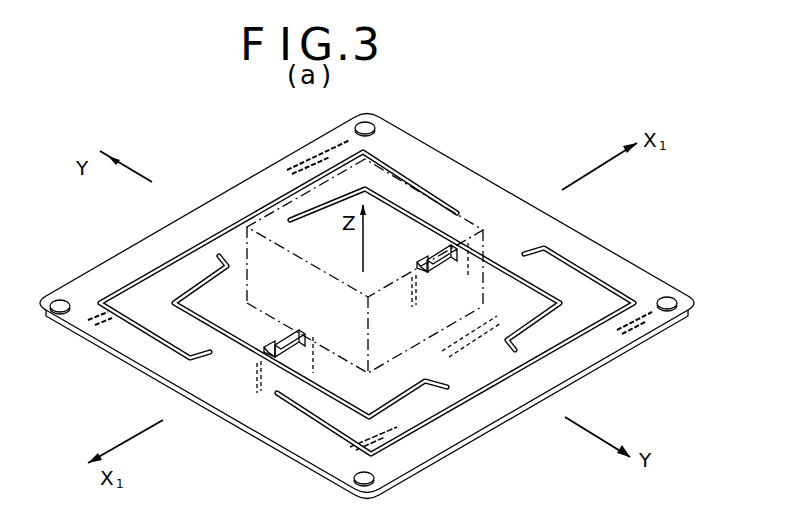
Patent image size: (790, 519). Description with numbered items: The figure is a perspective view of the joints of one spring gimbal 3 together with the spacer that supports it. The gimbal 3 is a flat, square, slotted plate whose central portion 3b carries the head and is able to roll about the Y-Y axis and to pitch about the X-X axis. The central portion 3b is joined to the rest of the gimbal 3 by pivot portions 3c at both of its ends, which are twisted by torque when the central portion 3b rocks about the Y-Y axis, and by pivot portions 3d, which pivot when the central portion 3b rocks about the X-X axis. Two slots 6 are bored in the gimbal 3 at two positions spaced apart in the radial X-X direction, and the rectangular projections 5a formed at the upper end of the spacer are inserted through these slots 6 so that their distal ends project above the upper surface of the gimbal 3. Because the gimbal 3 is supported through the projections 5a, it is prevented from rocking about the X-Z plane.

The spring gimbal 3 is at (628, 260).
The central portion 3b is at (414, 352).
The pivot portions 3c is at (230, 248).
The pivot portions 3d is at (493, 237).
The projections 5a is at (442, 263).
The slots 6 is at (420, 262).